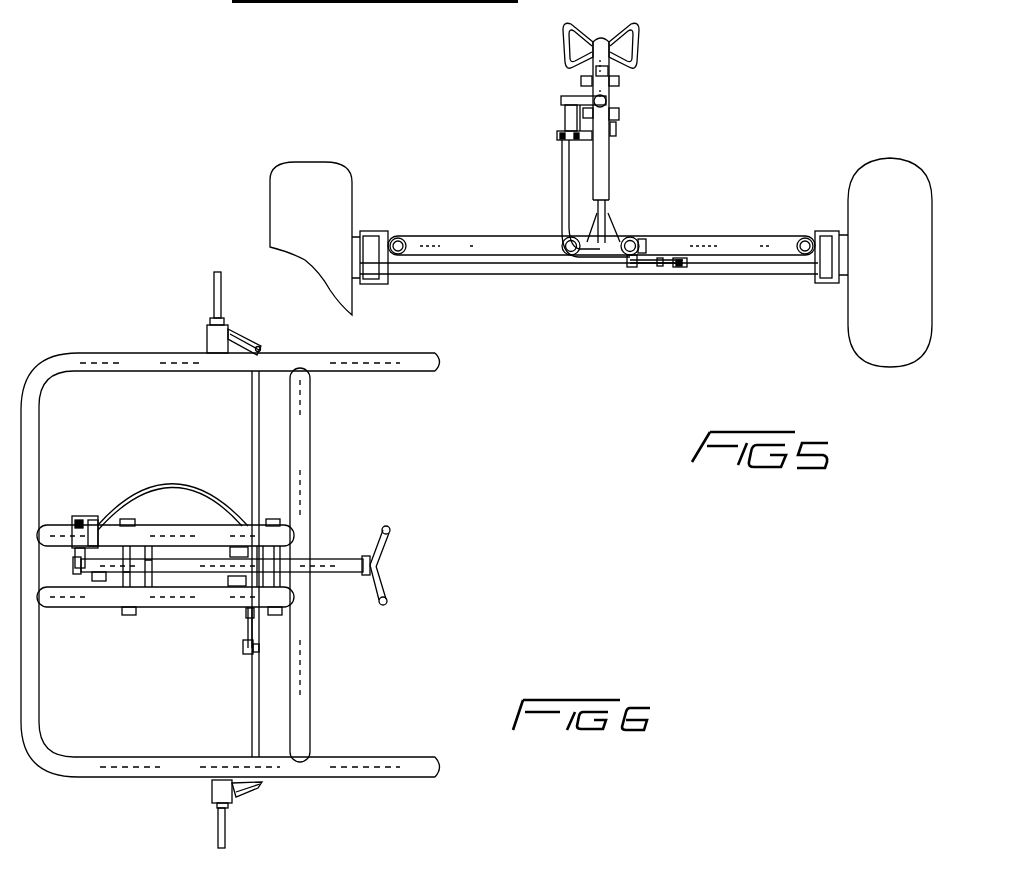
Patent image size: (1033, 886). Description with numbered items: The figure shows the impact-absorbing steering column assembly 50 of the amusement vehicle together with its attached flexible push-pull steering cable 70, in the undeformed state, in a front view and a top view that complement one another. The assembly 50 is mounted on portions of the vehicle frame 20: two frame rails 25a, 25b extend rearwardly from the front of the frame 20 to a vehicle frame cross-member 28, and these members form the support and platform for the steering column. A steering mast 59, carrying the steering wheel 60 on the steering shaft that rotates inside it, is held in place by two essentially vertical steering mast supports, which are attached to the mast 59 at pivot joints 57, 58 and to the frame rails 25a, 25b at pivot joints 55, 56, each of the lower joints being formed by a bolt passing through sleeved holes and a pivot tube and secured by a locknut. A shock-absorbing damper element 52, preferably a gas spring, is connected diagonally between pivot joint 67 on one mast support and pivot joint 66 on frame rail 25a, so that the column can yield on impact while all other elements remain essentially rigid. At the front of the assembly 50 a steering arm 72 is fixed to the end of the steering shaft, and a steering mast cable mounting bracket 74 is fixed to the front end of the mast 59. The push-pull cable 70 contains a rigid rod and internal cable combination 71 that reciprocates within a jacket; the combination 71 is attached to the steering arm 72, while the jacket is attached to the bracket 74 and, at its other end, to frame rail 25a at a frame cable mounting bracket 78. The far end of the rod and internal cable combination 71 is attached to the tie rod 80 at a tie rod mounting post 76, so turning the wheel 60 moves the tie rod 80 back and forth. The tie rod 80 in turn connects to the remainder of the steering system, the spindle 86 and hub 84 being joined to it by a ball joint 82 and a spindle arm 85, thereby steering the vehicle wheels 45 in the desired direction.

In FIG. 5, the vehicle frame 20 is at (778, 258).
In FIG. 6, the vehicle frame 20 is at (63, 355).
In FIG. 5, the frame rail 25a is at (636, 235).
In FIG. 6, the frame rail 25a is at (64, 548).
In FIG. 5, the frame rail 25b is at (572, 262).
In FIG. 6, the frame rail 25b is at (50, 608).
In FIG. 6, the vehicle frame cross-member 28 is at (311, 421).
In FIG. 5, the vehicle wheels 45 is at (313, 163).
In FIG. 5, the steering column assembly 50 is at (742, 46).
In FIG. 6, the steering column assembly 50 is at (338, 580).
In FIG. 5, the shock-absorbing damper element 52 is at (611, 160).
In FIG. 6, the pivot joint 55 is at (283, 612).
In FIG. 6, the pivot joint 56 is at (128, 615).
In FIG. 6, the pivot joint 57 is at (250, 546).
In FIG. 6, the pivot joint 58 is at (99, 582).
In FIG. 5, the steering mast 59 is at (615, 65).
In FIG. 6, the steering mast 59 is at (348, 559).
In FIG. 5, the steering wheel 60 is at (640, 42).
In FIG. 6, the steering wheel 60 is at (390, 532).
In FIG. 6, the pivot joint 66 is at (150, 578).
In FIG. 6, the pivot joint 67 is at (240, 547).
In FIG. 5, the push-pull cable 70 is at (551, 198).
In FIG. 6, the push-pull cable 70 is at (182, 487).
In FIG. 5, the rod and internal cable combination 71 is at (570, 125).
In FIG. 6, the rod and internal cable combination 71 is at (247, 625).
In FIG. 5, the steering arm 72 is at (564, 103).
In FIG. 6, the steering arm 72 is at (78, 516).
In FIG. 5, the steering mast cable mounting bracket 74 is at (582, 146).
In FIG. 6, the steering mast cable mounting bracket 74 is at (96, 516).
In FIG. 5, the tie rod mounting post 76 is at (684, 268).
In FIG. 6, the tie rod mounting post 76 is at (245, 656).
In FIG. 5, the frame cable mounting bracket 78 is at (632, 268).
In FIG. 6, the frame cable mounting bracket 78 is at (256, 618).
In FIG. 5, the tie rod 80 is at (477, 270).
In FIG. 6, the tie rod 80 is at (260, 702).
In FIG. 6, the ball joint 82 is at (254, 345).
In FIG. 5, the hub 84 is at (380, 231).
In FIG. 6, the hub 84 is at (230, 333).
In FIG. 6, the spindle arm 85 is at (258, 334).
In FIG. 6, the spindle 86 is at (222, 296).